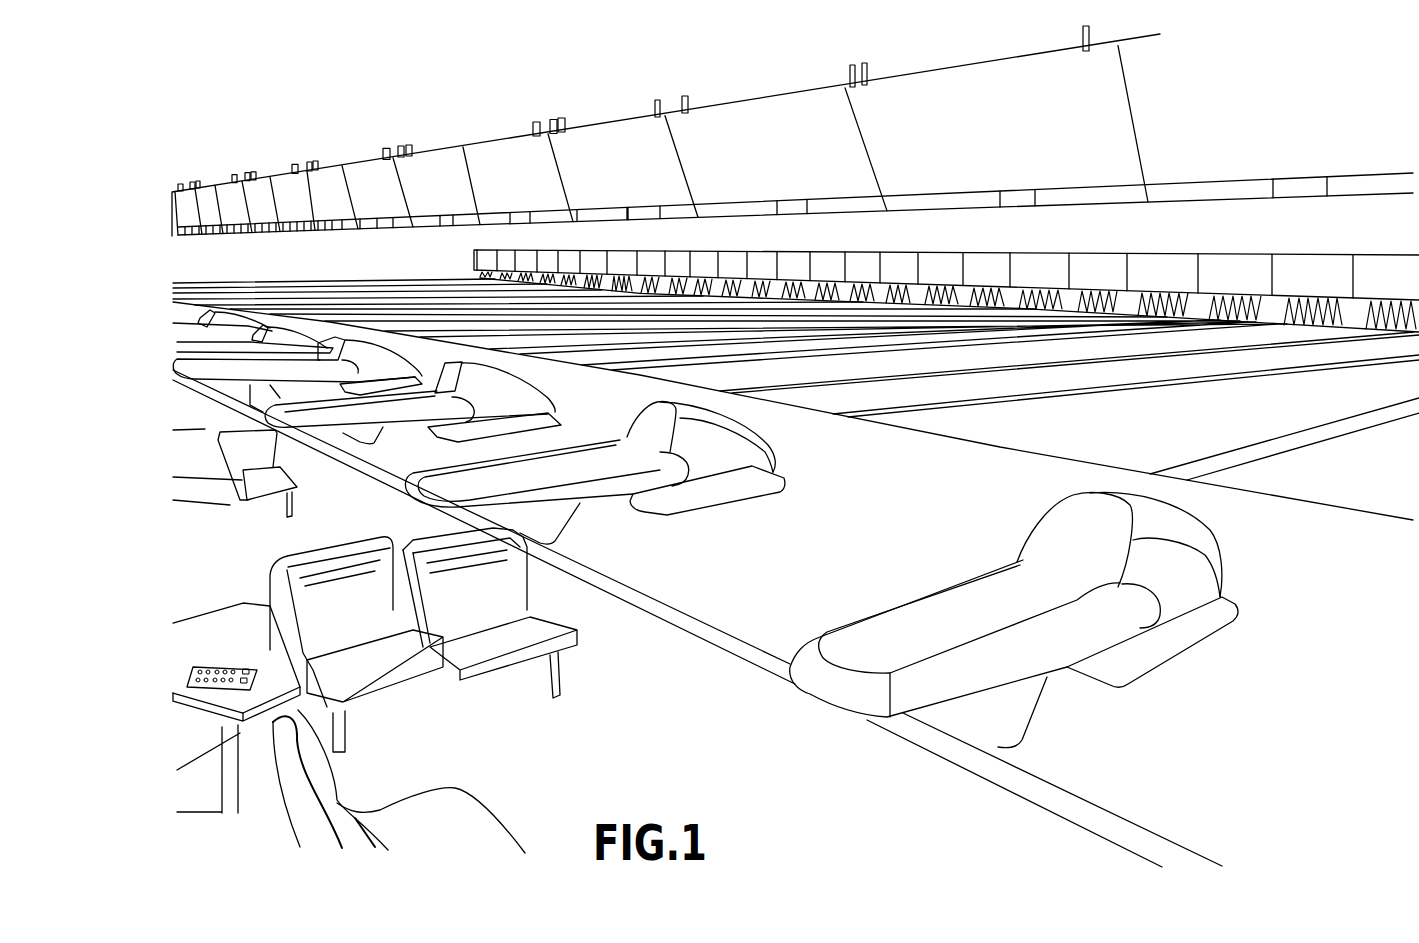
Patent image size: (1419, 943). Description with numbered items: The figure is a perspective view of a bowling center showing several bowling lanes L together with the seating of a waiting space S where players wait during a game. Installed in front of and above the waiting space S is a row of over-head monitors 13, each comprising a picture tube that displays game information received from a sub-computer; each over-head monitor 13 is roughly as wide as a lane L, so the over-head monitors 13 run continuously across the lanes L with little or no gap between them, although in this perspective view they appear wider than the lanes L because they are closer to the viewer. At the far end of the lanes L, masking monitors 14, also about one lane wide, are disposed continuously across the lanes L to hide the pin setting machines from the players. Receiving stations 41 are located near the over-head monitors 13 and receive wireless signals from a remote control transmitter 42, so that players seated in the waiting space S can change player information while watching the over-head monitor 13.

The over-head monitor 13 is at (917, 78).
The receiving station 41 is at (1298, 178).
The masking monitor 14 is at (1360, 259).
The lane L is at (1057, 450).
The waiting space S is at (688, 676).
The remote control transmitter 42 is at (222, 663).